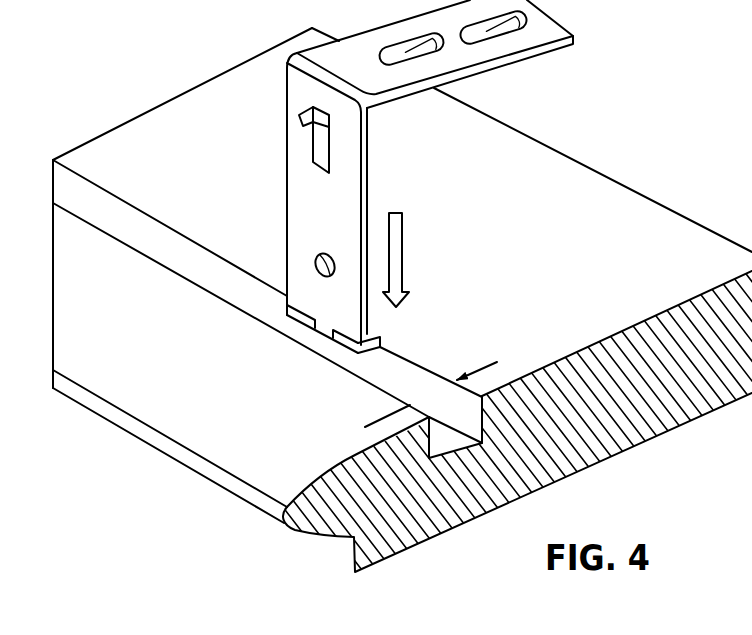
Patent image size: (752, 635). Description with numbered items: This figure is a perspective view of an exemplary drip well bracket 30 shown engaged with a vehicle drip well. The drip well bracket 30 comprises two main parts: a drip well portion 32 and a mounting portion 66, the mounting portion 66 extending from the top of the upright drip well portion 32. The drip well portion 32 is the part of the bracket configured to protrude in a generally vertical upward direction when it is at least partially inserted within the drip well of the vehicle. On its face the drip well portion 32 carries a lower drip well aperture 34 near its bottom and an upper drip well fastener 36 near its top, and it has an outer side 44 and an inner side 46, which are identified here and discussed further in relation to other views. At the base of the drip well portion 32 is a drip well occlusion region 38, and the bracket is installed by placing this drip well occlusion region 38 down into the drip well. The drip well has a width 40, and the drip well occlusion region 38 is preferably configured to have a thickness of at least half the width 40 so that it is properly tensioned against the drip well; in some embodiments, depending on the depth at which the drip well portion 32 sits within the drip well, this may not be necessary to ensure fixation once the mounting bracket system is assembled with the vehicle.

The drip well bracket 30 is at (590, 317).
The drip well portion 32 is at (348, 219).
The lower drip well aperture 34 is at (315, 263).
The upper drip well fastener 36 is at (332, 125).
The drip well occlusion region 38 is at (381, 343).
The width 40 is at (411, 406).
The outer side 44 is at (296, 177).
The inner side 46 is at (370, 172).
The mounting portion 66 is at (373, 67).